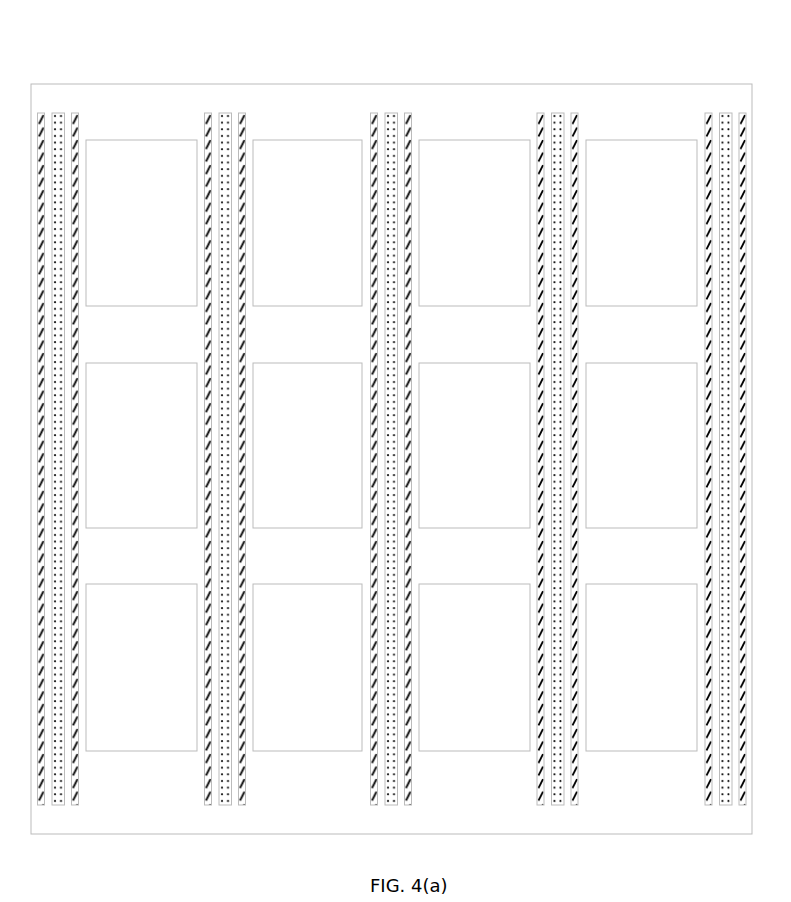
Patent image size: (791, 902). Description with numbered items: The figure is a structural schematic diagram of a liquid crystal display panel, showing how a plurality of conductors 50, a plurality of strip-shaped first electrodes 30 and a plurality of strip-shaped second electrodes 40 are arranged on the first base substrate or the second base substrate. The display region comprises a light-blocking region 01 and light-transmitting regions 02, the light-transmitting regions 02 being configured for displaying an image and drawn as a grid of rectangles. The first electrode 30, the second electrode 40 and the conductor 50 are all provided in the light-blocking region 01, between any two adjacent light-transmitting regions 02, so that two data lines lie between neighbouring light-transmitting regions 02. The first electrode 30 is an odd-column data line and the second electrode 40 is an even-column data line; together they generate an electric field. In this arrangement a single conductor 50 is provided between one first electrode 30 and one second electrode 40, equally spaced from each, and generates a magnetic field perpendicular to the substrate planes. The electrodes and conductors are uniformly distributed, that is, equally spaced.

The first electrode 30 is at (206, 115).
The conductor 50 is at (225, 115).
The second electrode 40 is at (242, 115).
The light-blocking region 01 is at (307, 126).
The light-transmitting region 02 is at (445, 179).